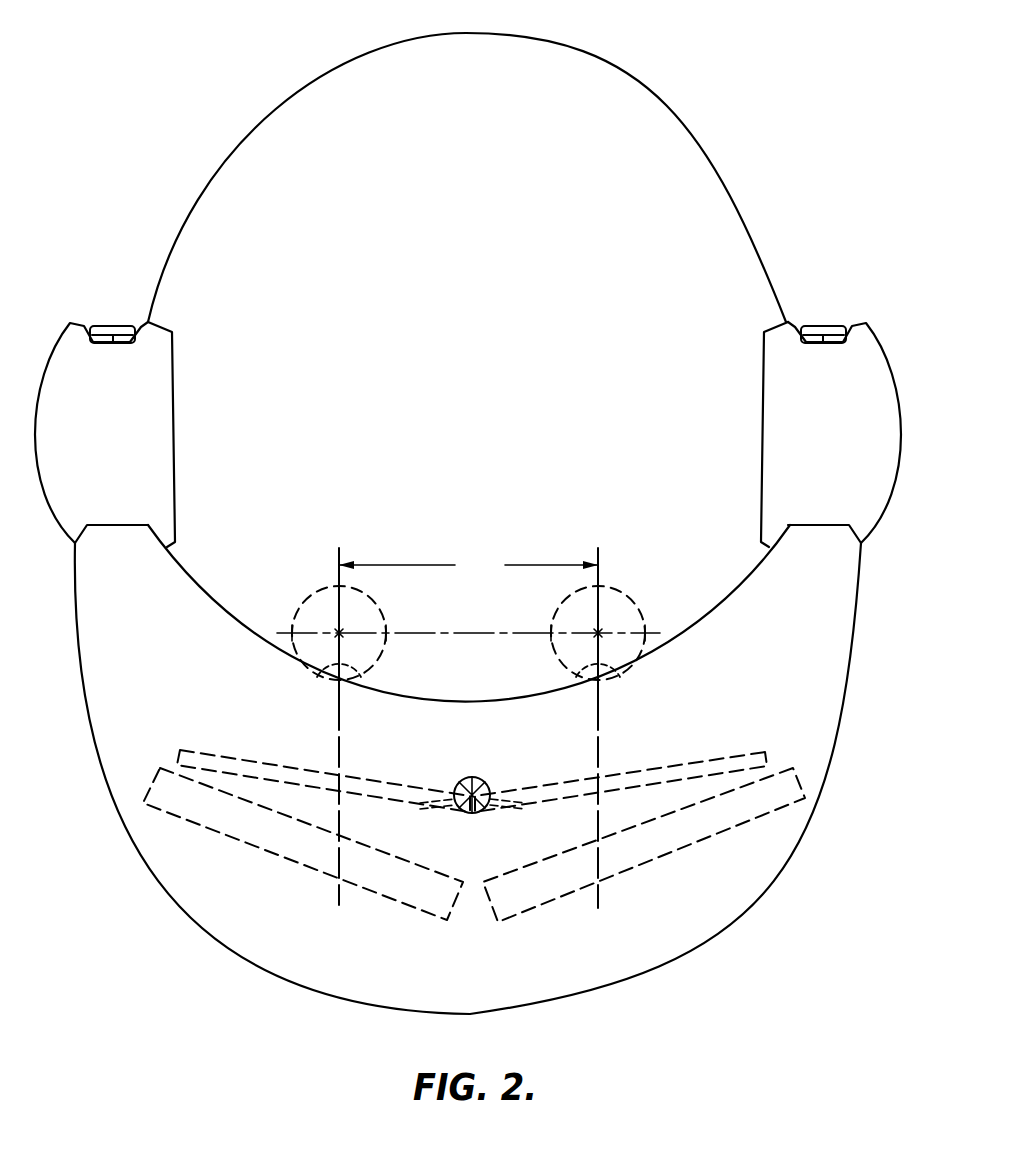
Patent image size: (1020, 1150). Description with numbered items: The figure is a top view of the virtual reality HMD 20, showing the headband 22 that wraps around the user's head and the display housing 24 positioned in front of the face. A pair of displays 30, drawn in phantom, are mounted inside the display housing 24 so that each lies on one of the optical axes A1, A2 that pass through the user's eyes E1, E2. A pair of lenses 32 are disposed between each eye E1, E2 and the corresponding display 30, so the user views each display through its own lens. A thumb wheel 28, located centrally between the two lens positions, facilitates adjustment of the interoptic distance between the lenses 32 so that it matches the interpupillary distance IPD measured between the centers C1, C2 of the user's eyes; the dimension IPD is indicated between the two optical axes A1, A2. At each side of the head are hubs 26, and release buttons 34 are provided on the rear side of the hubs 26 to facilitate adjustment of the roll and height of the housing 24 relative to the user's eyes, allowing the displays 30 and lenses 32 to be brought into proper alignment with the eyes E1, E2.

The virtual reality HMD 20 is at (622, 62).
The headband 22 is at (678, 160).
The display housing 24 is at (827, 714).
The hubs 26 is at (882, 442).
The thumb wheel 28 is at (475, 777).
The displays 30 is at (207, 832).
The lenses 32 is at (212, 755).
The release buttons 34 is at (821, 323).
The optical axis A1 is at (342, 553).
The optical axis A2 is at (601, 553).
The user's eye E1 is at (371, 607).
The user's eye E2 is at (629, 607).
The center of user's eye C1 is at (306, 602).
The center of user's eye C2 is at (598, 633).
The interpupillary distance IPD is at (468, 567).